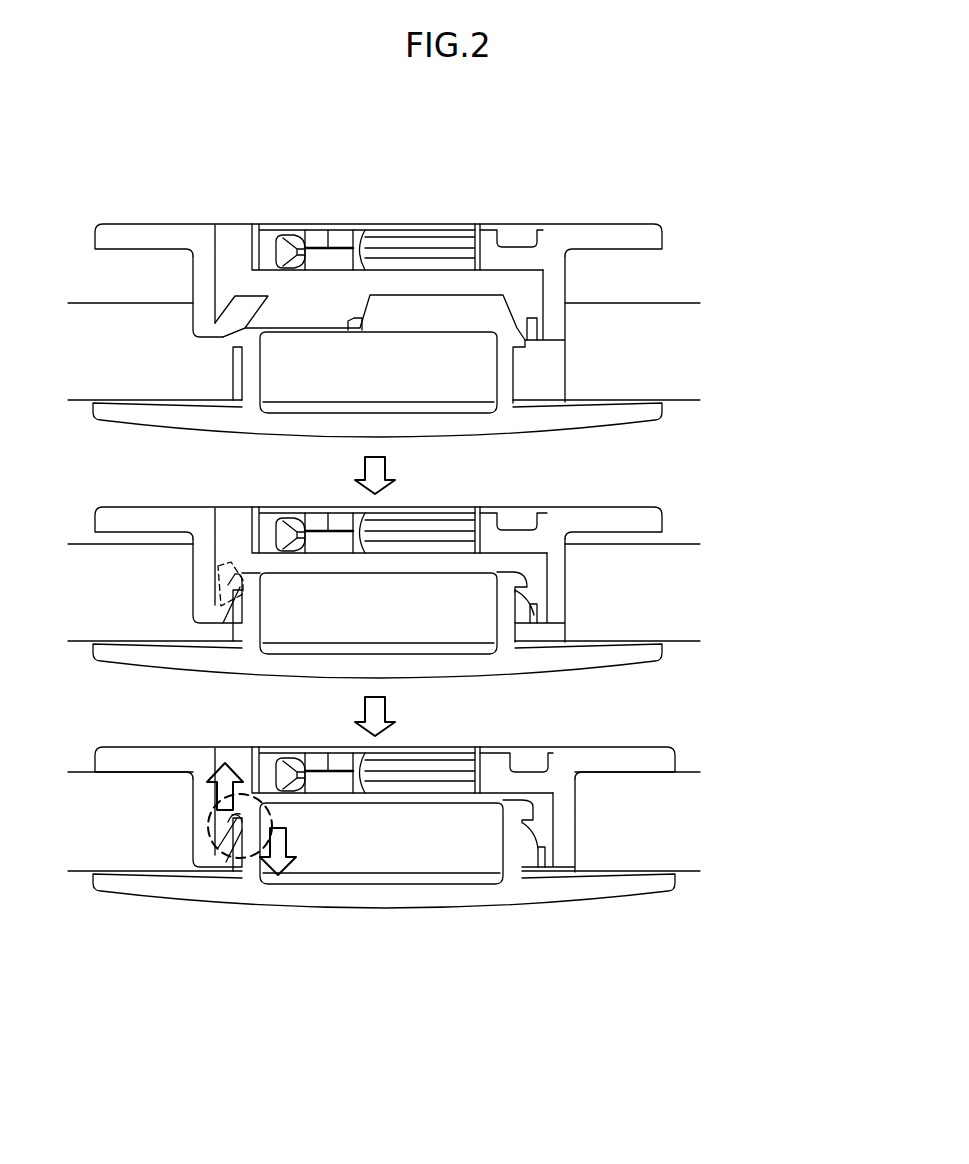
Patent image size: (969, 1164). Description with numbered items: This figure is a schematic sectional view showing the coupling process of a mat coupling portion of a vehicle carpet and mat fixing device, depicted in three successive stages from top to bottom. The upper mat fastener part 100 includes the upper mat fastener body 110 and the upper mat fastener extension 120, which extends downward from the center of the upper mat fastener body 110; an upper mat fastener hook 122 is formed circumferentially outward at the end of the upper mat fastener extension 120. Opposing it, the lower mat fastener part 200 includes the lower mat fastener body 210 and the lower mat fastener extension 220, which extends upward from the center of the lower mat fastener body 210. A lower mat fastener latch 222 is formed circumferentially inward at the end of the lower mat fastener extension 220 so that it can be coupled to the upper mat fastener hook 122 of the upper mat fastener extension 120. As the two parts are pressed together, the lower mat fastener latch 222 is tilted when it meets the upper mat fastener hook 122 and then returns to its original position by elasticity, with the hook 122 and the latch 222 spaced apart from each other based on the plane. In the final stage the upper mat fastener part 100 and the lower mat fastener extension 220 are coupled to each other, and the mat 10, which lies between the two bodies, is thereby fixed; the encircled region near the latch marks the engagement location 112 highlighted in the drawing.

The mat 10 is at (683, 343).
The upper mat fastener part 100 is at (475, 664).
The upper mat fastener body 110 is at (662, 415).
The engagement groove 112 is at (238, 818).
The upper mat fastener extension 120 is at (447, 608).
The upper mat fastener hook 122 is at (233, 347).
The lower mat fastener part 200 is at (476, 540).
The lower mat fastener body 210 is at (662, 233).
The lower mat fastener extension 220 is at (447, 548).
The lower mat fastener latch 222 is at (237, 302).